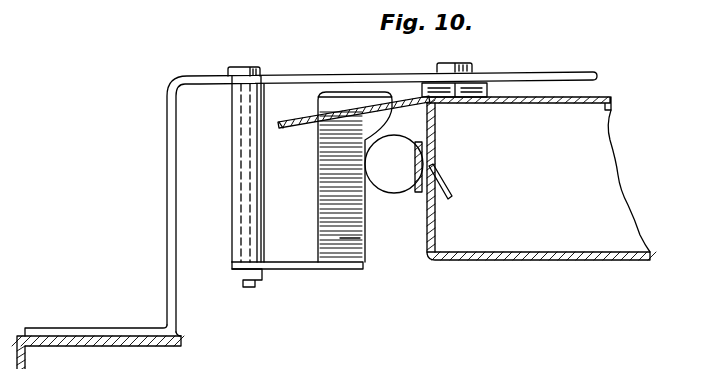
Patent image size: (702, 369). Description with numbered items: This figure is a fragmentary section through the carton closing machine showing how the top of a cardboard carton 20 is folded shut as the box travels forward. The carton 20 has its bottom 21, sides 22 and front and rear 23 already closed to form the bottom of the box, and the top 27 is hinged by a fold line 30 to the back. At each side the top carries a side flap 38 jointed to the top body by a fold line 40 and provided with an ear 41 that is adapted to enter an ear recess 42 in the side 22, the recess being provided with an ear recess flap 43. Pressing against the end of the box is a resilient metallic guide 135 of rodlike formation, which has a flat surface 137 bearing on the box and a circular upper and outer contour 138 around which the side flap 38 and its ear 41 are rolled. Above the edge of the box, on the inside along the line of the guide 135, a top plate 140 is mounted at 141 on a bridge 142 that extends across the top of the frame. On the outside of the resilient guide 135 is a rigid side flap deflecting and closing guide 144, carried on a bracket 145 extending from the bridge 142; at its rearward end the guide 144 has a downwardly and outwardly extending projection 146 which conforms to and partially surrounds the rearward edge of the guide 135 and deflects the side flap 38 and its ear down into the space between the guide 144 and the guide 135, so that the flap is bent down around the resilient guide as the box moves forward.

The carton 20 is at (541, 170).
The bottom 21 is at (545, 251).
The sides 22 is at (437, 228).
The front and rear 23 is at (596, 141).
The top 27 is at (606, 97).
The fold line 30 is at (613, 110).
The side flap 38 is at (286, 132).
The fold line 40 is at (417, 92).
The ear 41 is at (284, 124).
The ear recess 42 is at (437, 205).
The ear recess flap 43 is at (450, 195).
The resilient metallic guide 135 is at (432, 136).
The flat surface 137 is at (445, 150).
The circular upper and outer contour 138 is at (392, 192).
The top plate 140 is at (480, 83).
The mounting 141 is at (465, 68).
The bridge 142 is at (580, 73).
The side flap deflecting and closing guide 144 is at (355, 238).
The bracket 145 is at (297, 267).
The projection 146 is at (345, 108).